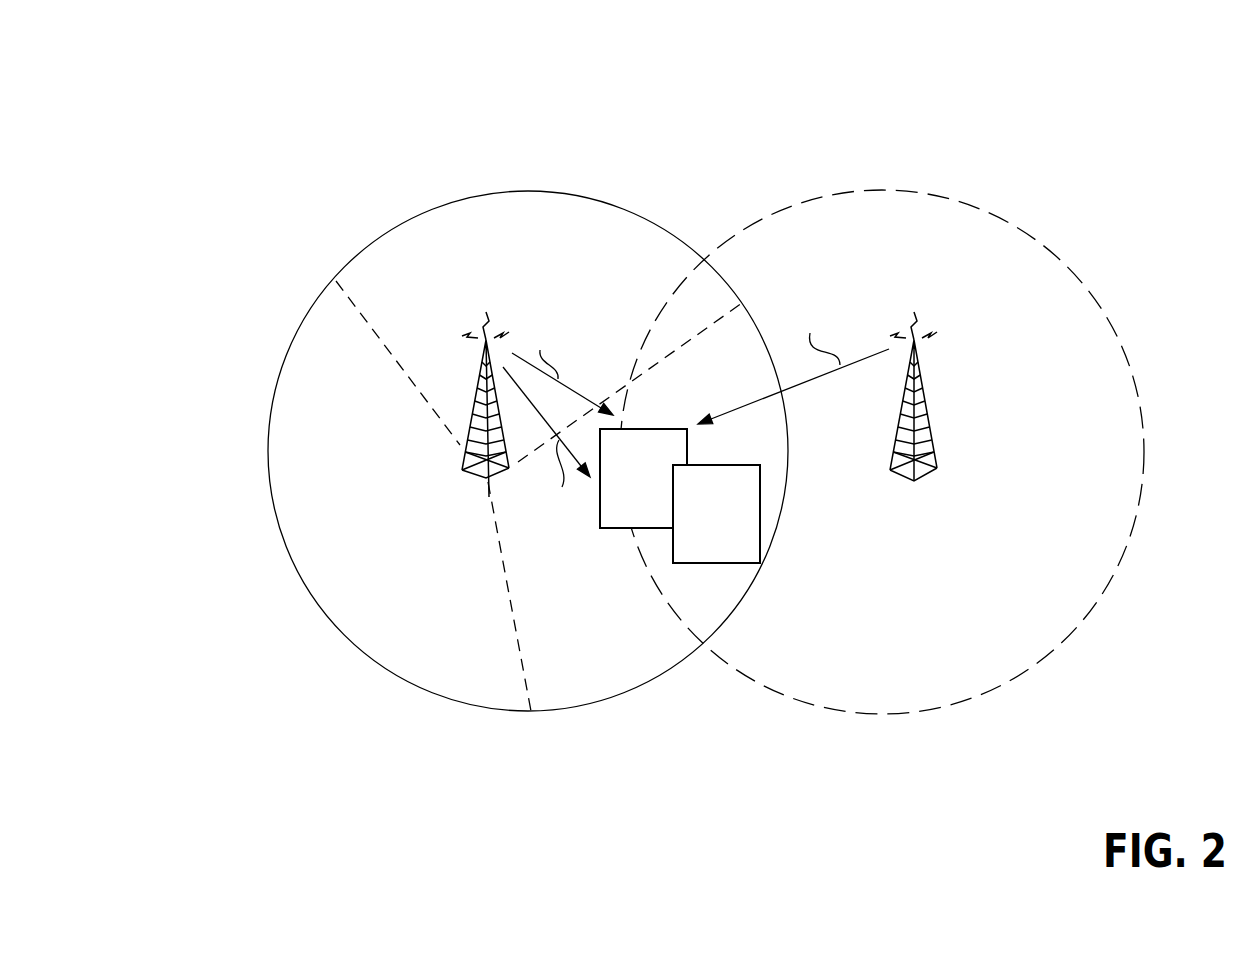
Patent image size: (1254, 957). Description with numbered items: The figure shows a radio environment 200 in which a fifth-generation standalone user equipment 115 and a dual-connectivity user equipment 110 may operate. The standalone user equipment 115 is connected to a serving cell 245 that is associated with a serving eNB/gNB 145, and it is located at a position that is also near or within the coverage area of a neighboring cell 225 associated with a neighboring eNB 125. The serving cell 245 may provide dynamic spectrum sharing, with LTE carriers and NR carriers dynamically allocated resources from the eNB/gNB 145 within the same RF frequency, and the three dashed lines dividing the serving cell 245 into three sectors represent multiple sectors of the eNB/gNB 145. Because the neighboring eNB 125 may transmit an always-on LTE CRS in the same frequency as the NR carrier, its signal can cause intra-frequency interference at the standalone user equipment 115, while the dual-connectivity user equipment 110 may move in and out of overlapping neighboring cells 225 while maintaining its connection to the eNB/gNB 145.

The radio environment 200 is at (243, 90).
The serving cell 245 is at (310, 313).
The neighboring cell 225 is at (1112, 333).
The eNB/gNB 145 is at (478, 383).
The eNB 125 is at (926, 383).
The 5G SA UE 115 is at (643, 478).
The EN-DC UE 110 is at (716, 514).